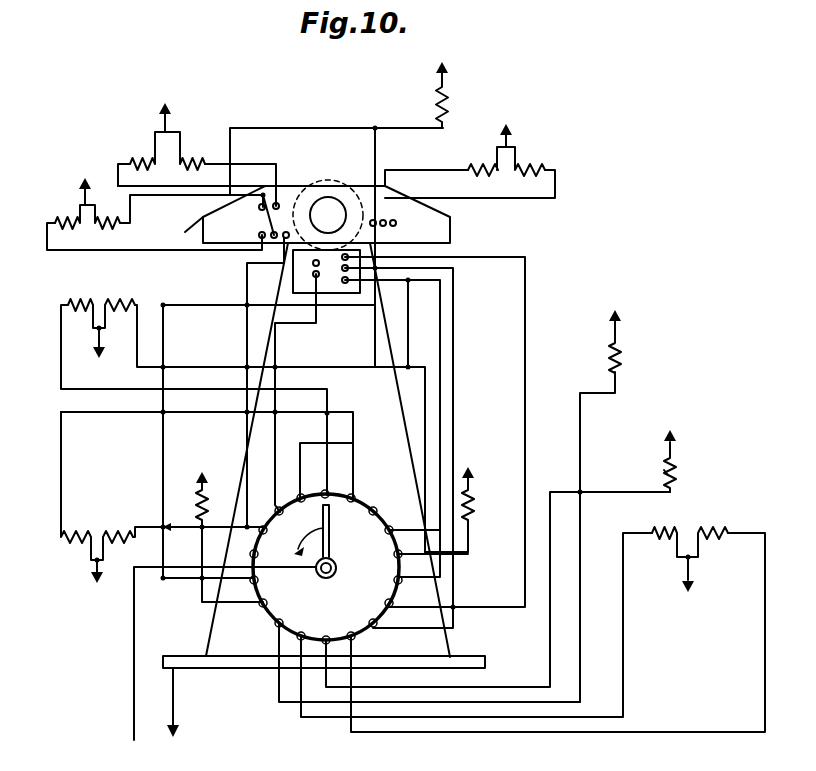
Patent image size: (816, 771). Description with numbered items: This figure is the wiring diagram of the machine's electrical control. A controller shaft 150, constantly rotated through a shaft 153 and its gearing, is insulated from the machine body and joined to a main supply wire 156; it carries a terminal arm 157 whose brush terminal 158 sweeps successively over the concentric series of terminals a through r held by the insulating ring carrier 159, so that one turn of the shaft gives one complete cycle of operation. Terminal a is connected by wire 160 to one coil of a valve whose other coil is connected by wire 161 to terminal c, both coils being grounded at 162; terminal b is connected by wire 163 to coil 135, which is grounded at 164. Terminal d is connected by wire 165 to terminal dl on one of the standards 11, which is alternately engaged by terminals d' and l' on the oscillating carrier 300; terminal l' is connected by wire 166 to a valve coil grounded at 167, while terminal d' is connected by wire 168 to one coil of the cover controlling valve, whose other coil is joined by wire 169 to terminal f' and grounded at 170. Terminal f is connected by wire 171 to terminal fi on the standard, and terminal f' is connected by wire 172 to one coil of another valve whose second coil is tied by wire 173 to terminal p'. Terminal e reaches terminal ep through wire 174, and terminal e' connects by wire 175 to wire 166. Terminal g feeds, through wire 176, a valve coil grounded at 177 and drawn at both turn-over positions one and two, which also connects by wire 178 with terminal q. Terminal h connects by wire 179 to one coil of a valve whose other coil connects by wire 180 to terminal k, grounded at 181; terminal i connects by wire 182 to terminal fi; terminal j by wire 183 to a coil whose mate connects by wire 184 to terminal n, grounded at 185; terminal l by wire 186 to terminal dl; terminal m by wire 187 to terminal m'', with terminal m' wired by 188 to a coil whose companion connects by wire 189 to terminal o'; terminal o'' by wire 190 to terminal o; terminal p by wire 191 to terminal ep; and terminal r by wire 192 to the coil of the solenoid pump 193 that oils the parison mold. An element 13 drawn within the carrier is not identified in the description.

The standard 11 is at (447, 645).
The timer motor 13 is at (328, 215).
The coil 135 is at (666, 468).
The controller shaft 150 is at (331, 579).
The shaft 153 is at (607, 491).
The main supply wire 156 is at (133, 695).
The terminal arm 157 is at (329, 545).
The brush terminal 158 is at (340, 495).
The insulating ring carrier 159 is at (268, 618).
The wire 160 is at (623, 645).
The wire 161 is at (765, 640).
The ground 162 is at (692, 572).
The wire 163 is at (512, 688).
The ground 164 is at (678, 440).
The wire 165 is at (453, 372).
The wire 166 is at (348, 128).
The ground 167 is at (448, 76).
The wire 168 is at (437, 170).
The wire 169 is at (537, 200).
The ground 170 is at (513, 138).
The wire 171 is at (440, 320).
The wire 172 is at (188, 250).
The wire 173 is at (175, 196).
The wire 174 is at (525, 377).
The wire 175 is at (372, 147).
The wire 176 is at (468, 552).
The ground 177 is at (470, 482).
The wire 178 is at (200, 605).
The wire 179 is at (138, 325).
The wire 180 is at (61, 362).
The ground 181 is at (100, 340).
The wire 182 is at (410, 318).
The wire 183 is at (61, 470).
The wire 184 is at (149, 520).
The ground 185 is at (90, 568).
The wire 186 is at (312, 443).
The wire 187 is at (277, 337).
The wire 188 is at (118, 164).
The wire 189 is at (278, 165).
The wire 190 is at (247, 292).
The wire 191 is at (248, 442).
The wire 192 is at (272, 686).
The solenoid pump 193 is at (628, 365).
The oscillating carrier 300 is at (185, 230).